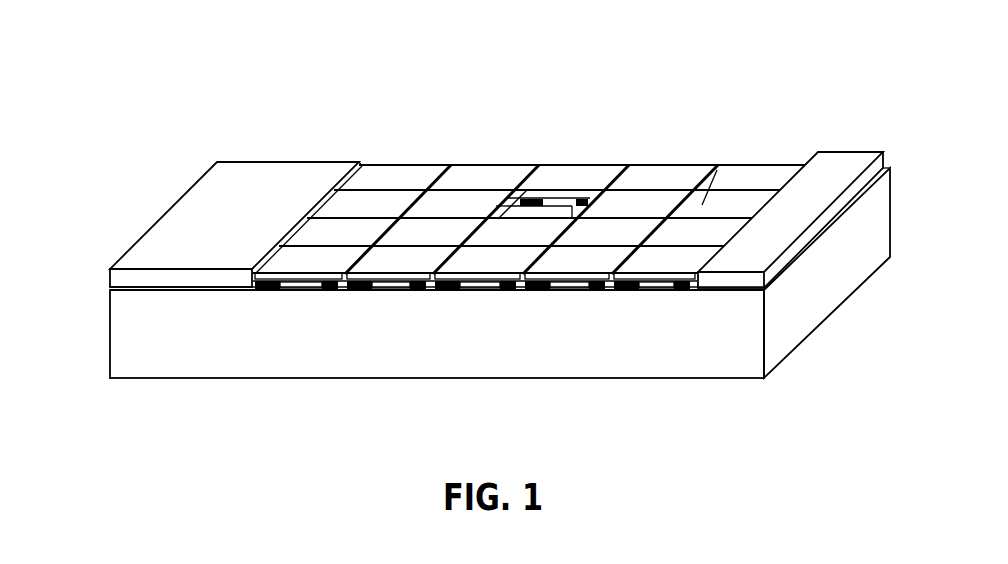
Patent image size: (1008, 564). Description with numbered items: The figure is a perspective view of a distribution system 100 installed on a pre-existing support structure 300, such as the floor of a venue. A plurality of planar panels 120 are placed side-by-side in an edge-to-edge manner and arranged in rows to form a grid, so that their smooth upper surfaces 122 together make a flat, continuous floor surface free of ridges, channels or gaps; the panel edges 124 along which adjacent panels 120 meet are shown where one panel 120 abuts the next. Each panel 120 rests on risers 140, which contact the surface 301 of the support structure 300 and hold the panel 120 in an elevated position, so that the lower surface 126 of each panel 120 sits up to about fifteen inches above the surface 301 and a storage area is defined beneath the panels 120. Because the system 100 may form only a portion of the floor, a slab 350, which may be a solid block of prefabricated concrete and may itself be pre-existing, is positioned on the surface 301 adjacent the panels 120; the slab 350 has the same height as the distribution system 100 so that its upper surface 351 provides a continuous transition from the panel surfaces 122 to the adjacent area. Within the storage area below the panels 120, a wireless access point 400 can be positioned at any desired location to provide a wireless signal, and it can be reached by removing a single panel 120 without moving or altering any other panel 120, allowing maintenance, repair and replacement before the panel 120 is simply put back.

The distribution system 100 is at (341, 80).
The panel 120 is at (477, 178).
The surface 122 is at (598, 190).
The frame 124 is at (620, 162).
The lower surface 126 is at (395, 292).
The riser 140 is at (600, 291).
The support structure 300 is at (127, 335).
The surface 301 is at (770, 190).
The slab 350 is at (127, 277).
The surface 351 is at (252, 226).
The wireless access point 400 is at (553, 216).